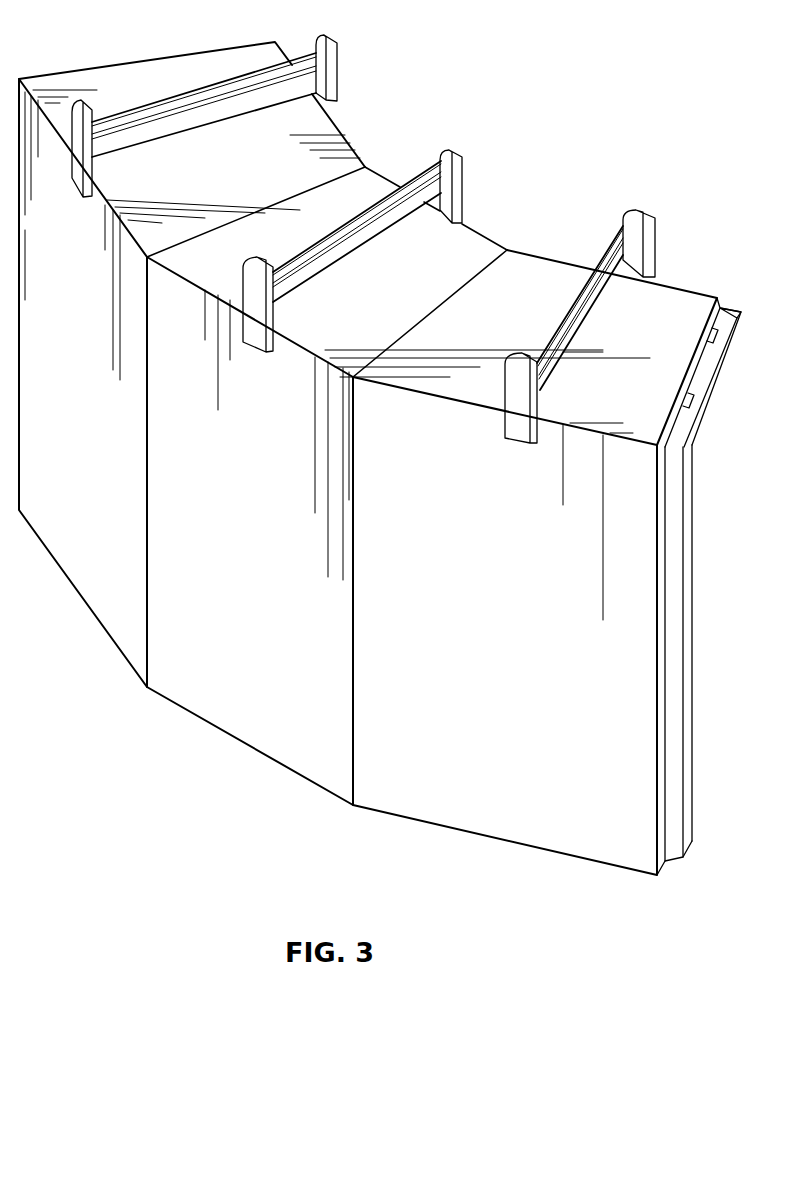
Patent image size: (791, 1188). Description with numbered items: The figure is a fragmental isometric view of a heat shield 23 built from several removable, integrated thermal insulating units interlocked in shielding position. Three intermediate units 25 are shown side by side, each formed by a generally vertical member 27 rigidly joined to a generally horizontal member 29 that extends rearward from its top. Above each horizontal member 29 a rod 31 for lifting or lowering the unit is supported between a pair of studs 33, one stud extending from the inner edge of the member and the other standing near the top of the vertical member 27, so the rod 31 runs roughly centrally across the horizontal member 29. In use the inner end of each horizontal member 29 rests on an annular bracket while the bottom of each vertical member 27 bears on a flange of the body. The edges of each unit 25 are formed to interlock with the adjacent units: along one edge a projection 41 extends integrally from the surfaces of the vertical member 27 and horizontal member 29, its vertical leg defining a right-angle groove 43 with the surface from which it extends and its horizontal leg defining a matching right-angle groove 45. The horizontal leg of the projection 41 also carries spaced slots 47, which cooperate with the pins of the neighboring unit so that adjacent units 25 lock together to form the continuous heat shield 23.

The heat shield 23 is at (507, 182).
The intermediate unit 25 is at (276, 42).
The vertical member 27 is at (590, 813).
The horizontal member 29 is at (318, 168).
The rod 31 is at (176, 98).
The stud 33 is at (340, 50).
The projection 41 is at (687, 445).
The right-angle groove 43 is at (663, 739).
The right-angle groove 45 is at (724, 306).
The slot 47 is at (685, 400).